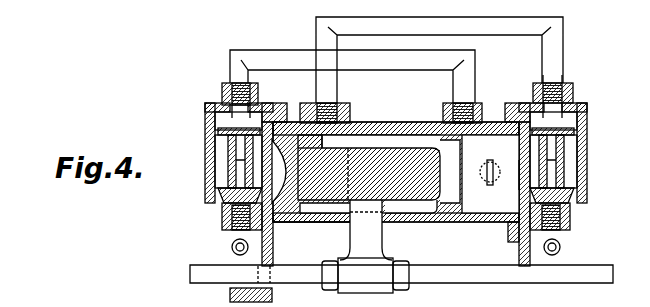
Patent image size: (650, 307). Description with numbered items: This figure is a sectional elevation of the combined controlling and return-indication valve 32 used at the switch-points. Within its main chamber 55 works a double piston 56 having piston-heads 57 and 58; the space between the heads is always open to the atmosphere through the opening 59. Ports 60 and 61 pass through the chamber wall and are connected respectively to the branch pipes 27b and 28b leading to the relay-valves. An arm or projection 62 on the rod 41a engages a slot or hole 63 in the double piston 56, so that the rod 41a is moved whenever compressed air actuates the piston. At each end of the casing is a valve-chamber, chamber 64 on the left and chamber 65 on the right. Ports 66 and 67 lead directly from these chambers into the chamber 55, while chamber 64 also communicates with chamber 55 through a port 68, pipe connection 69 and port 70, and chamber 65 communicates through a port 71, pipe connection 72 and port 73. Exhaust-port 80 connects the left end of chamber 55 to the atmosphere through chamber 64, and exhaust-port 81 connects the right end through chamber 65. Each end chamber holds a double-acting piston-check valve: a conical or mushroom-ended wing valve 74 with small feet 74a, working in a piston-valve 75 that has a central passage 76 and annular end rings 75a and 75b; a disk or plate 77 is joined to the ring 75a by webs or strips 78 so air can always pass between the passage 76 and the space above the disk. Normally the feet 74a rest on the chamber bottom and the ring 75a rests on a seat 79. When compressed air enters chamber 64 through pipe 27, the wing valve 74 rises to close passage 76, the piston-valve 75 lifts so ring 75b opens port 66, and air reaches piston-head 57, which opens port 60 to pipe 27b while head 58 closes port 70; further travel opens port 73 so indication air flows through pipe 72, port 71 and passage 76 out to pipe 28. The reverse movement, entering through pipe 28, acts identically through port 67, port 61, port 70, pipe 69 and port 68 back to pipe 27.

The combined controlling and return-indication valve 32 is at (380, 161).
The pipe connection 72 is at (439, 60).
The pipe connection 69 is at (352, 76).
The disk or plate 77 is at (256, 108).
The webs or strips 78 is at (386, 110).
The port 73 is at (327, 131).
The slot or hole 63 is at (372, 135).
The main chamber 55 is at (404, 140).
The double piston 56 is at (369, 167).
The port 66 is at (282, 171).
The port 60 is at (300, 175).
The branch pipe 27b is at (312, 172).
The piston-head 57 is at (296, 228).
The arm or projection 62 is at (365, 246).
The opening 59 is at (405, 215).
The piston-head 58 is at (430, 215).
The port 70 is at (477, 124).
The port 67 is at (518, 173).
The port 61 is at (489, 185).
The branch pipe 28b is at (496, 180).
The port 68 is at (222, 97).
The chamber 64 is at (210, 108).
The central passage 76 is at (212, 125).
The annular end ring 75a is at (218, 132).
The seat 79 is at (214, 146).
The exhaust-port 80 is at (224, 160).
The exhaust-port 81 is at (576, 165).
The piston-valve 75 is at (226, 178).
The annular end ring 75b is at (226, 195).
The wing valve 74 is at (232, 215).
The feet 74a is at (226, 228).
The pipe 27 is at (232, 247).
The pipe 28 is at (560, 247).
The port 71 is at (570, 96).
The chamber 65 is at (566, 104).
The rod 41a is at (320, 278).